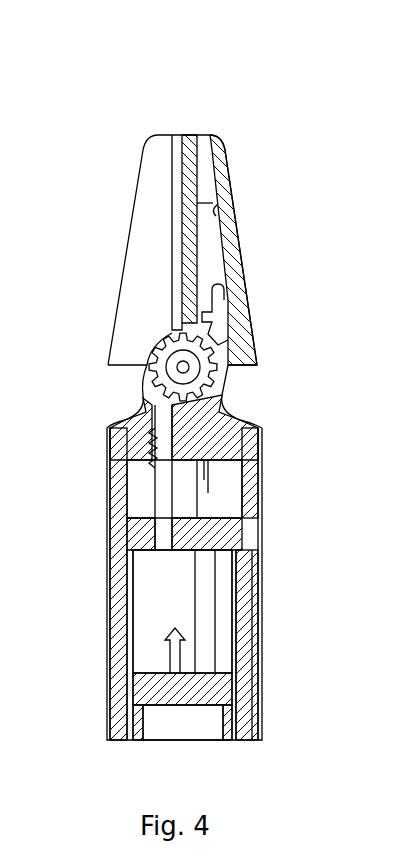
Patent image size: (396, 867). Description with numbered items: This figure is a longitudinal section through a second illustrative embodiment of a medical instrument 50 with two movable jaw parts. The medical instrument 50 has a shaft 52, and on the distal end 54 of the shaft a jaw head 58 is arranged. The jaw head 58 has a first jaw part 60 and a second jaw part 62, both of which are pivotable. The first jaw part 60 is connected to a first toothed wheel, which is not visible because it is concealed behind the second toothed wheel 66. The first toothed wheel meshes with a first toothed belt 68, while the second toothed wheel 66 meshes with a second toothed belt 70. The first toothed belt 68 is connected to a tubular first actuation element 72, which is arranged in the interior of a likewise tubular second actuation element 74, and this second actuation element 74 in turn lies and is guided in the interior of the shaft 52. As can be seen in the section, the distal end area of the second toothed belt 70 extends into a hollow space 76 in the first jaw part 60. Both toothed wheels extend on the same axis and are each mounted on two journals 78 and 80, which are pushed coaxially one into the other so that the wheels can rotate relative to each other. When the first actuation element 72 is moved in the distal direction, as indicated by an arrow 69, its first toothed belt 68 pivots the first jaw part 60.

The medical instrument 50 is at (100, 122).
The jaw head 58 is at (237, 150).
The second jaw part 62 is at (146, 262).
The first jaw part 60 is at (232, 240).
The hollow space 76 is at (218, 204).
The second toothed belt 70 is at (220, 298).
The second toothed wheel 66 is at (158, 347).
The journal 80 is at (178, 368).
The journal 78 is at (190, 362).
The shaft 52 is at (122, 490).
The distal end 54 is at (140, 425).
The second actuation element 74 is at (132, 604).
The first toothed belt 68 is at (203, 585).
The arrow 69 is at (172, 657).
The first actuation element 72 is at (215, 695).